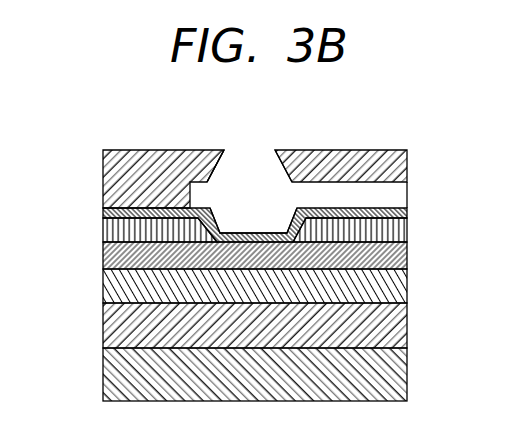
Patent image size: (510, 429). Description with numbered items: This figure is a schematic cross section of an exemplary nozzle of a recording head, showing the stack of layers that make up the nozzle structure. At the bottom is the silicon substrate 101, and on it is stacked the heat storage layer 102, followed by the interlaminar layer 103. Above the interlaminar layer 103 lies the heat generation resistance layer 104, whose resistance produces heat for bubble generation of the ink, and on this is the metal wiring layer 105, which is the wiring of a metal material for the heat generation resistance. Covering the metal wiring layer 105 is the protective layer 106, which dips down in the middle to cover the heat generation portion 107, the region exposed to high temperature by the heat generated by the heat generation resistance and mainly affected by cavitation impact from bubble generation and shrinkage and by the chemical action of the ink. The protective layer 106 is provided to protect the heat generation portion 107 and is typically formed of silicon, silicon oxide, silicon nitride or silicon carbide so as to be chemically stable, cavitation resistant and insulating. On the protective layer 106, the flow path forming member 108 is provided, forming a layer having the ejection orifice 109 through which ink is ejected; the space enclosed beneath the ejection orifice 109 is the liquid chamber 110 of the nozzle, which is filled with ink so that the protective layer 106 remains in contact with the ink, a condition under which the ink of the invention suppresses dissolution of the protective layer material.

The silicon substrate 101 is at (398, 370).
The heat storage layer 102 is at (399, 333).
The interlaminar layer 103 is at (398, 289).
The heat generation resistance layer 104 is at (398, 257).
The metal wiring layer 105 is at (398, 229).
The protective layer 106 is at (402, 212).
The heat generation portion 107 is at (295, 205).
The flow path forming member 108 is at (118, 170).
The ejection orifice 109 is at (275, 142).
The liquid chamber 110 is at (227, 165).